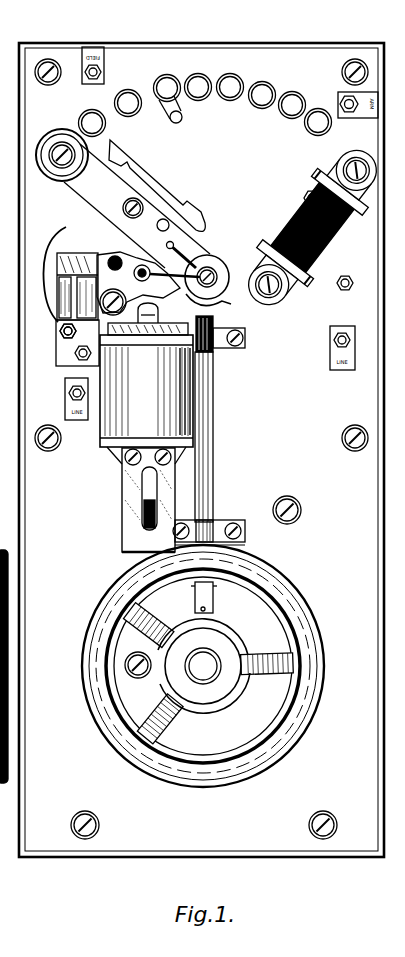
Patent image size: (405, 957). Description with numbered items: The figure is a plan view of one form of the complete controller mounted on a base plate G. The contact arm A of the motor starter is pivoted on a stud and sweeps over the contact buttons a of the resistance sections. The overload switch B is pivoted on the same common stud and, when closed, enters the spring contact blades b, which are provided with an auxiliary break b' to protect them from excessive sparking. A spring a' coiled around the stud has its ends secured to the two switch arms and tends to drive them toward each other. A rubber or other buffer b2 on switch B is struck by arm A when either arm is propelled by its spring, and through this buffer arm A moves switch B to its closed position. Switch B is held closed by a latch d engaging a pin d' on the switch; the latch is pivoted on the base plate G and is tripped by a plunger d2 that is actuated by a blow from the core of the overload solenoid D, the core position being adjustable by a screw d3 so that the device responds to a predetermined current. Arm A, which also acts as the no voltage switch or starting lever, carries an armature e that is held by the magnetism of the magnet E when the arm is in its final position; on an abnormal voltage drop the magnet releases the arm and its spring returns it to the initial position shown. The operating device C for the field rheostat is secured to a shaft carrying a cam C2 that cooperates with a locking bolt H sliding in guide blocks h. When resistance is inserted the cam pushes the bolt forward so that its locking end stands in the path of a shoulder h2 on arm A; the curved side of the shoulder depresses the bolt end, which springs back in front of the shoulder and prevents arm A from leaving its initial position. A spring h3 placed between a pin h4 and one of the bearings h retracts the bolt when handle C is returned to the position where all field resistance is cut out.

The contact arm A is at (75, 201).
The overload switch B is at (77, 302).
The operating device for the field rheostat C is at (318, 657).
The cam C2 is at (222, 703).
The overload solenoid D is at (146, 393).
The magnet E is at (307, 221).
The base plate G is at (4, 623).
The locking bolt H is at (214, 400).
The contact buttons a is at (205, 105).
The spring a' is at (213, 265).
The spring contact blades b is at (56, 335).
The auxiliary break b' is at (48, 274).
The buffer b2 is at (140, 265).
The latch d is at (132, 280).
The pin d' is at (149, 251).
The plunger d2 is at (161, 312).
The screw d3 is at (143, 506).
The armature e is at (157, 185).
The guide blocks h is at (246, 338).
The shoulder h2 is at (217, 302).
The spring h3 is at (216, 544).
The pin h4 is at (215, 592).